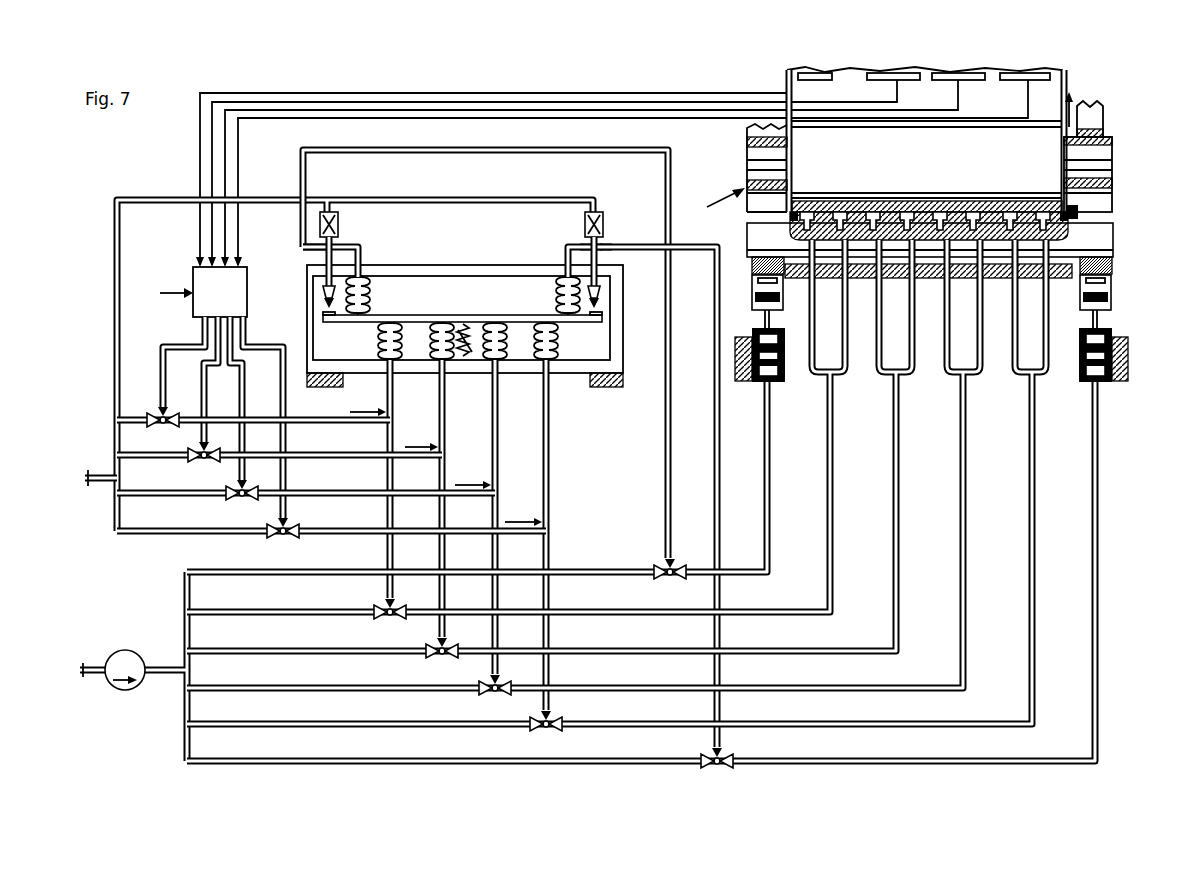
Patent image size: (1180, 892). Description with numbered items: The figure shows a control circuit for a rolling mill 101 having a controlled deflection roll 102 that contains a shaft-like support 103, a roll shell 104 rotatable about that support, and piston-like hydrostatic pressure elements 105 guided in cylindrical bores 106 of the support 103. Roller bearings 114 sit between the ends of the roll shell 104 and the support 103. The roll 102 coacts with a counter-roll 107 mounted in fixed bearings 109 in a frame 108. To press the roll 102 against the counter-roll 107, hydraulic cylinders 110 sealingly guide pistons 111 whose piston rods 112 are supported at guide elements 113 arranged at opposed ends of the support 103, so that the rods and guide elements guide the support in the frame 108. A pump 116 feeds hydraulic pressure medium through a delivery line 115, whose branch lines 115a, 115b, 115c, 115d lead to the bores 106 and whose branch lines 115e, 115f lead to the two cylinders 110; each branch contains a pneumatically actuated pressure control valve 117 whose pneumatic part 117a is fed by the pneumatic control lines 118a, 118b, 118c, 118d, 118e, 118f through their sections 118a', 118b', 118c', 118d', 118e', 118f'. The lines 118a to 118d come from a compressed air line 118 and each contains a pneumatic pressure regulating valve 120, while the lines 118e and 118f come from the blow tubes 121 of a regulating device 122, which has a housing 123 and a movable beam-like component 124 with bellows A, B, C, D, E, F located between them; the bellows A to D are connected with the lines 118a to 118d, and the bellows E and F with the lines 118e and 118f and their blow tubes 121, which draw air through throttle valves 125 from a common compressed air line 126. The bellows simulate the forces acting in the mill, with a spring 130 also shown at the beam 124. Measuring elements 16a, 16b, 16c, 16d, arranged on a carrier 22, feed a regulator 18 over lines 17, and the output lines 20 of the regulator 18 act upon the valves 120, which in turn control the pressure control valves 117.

The measuring element 16a is at (796, 79).
The measuring element 16b is at (899, 82).
The measuring element 16c is at (972, 82).
The measuring element 16d is at (1056, 77).
The signal lines 17 is at (240, 148).
The regulator 18 is at (195, 280).
The output lines 20 is at (163, 360).
The sensor carrier 22 is at (1050, 90).
The rolling mill 101 is at (713, 203).
The controlled deflection roll 102 is at (1090, 203).
The support 103 is at (1106, 248).
The roll shell 104 is at (835, 201).
The hydrostatic pressure elements 105 is at (876, 212).
The cylindrical bores 106 is at (985, 214).
The counter-roll 107 is at (926, 141).
The frame 108 is at (1098, 118).
The fixed bearings 109 is at (747, 150).
The hydraulic cylinders 110 is at (764, 392).
The pistons 111 is at (784, 372).
The piston rods 112 is at (753, 306).
The guide elements 113 is at (755, 268).
The roller bearings 114 is at (796, 211).
The delivery line 115 is at (166, 668).
The branch line 115a is at (567, 611).
The branch line 115b is at (567, 650).
The branch line 115c is at (567, 687).
The branch line 115d is at (567, 723).
The branch line 115e is at (582, 571).
The branch line 115f is at (580, 760).
The pump 116 is at (137, 688).
The pressure control valves 117 is at (376, 609).
The pneumatic parts 117a is at (393, 601).
The fluid supply line 118 is at (90, 484).
The pneumatic control line 118a is at (253, 406).
The pneumatic control line 118b is at (279, 442).
The pneumatic control line 118c is at (306, 479).
The pneumatic control line 118d is at (331, 517).
The pneumatic control line 118e is at (369, 247).
The pneumatic control line 118f is at (558, 242).
The control line section 118a' is at (357, 479).
The control line section 118b' is at (417, 498).
The control line section 118c' is at (475, 517).
The control line section 118d' is at (573, 535).
The control line section 118e' is at (485, 354).
The control line section 118f' is at (681, 497).
The pressure regulating valves 120 is at (158, 410).
The blow tubes 121 is at (303, 250).
The regulating device 122 is at (451, 244).
The housing 123 is at (498, 268).
The beam-like component 124 is at (373, 316).
The throttle valves 125 is at (339, 222).
The common compressed air line 126 is at (172, 198).
The spring 130 is at (463, 325).
The bellows A is at (377, 341).
The bellows B is at (430, 341).
The bellows C is at (507, 340).
The bellows D is at (558, 340).
The bellows E is at (357, 276).
The bellows F is at (555, 292).